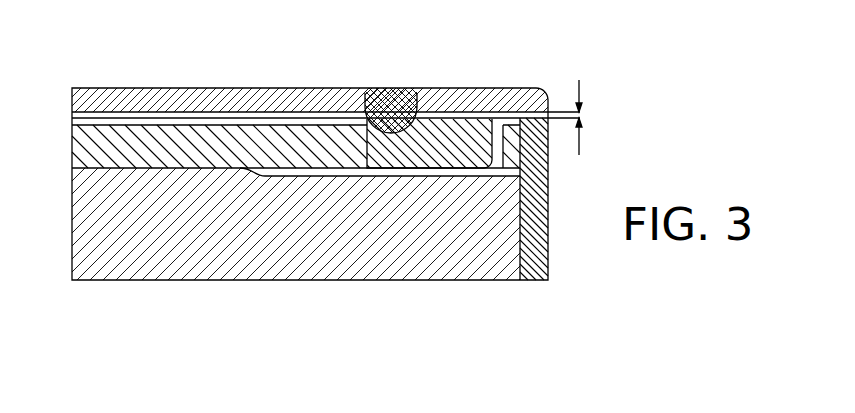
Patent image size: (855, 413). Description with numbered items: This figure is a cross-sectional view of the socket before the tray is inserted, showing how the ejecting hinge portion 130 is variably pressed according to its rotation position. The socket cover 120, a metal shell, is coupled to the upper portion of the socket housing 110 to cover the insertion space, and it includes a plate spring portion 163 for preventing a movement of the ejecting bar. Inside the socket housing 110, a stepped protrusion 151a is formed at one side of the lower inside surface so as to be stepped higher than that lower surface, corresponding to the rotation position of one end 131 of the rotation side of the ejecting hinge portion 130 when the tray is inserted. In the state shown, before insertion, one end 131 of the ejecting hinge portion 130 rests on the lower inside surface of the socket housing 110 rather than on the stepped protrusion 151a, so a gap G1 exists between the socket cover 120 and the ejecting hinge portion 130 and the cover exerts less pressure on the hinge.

The socket housing 110 is at (374, 265).
The socket cover 120 is at (195, 100).
The ejecting hinge portion 130 is at (278, 148).
The one end of the rotation side of the ejecting hinge portion 131 is at (458, 133).
The stepped protrusion 151a is at (240, 168).
The plate spring portion 163 is at (388, 95).
The gap G1 is at (593, 117).